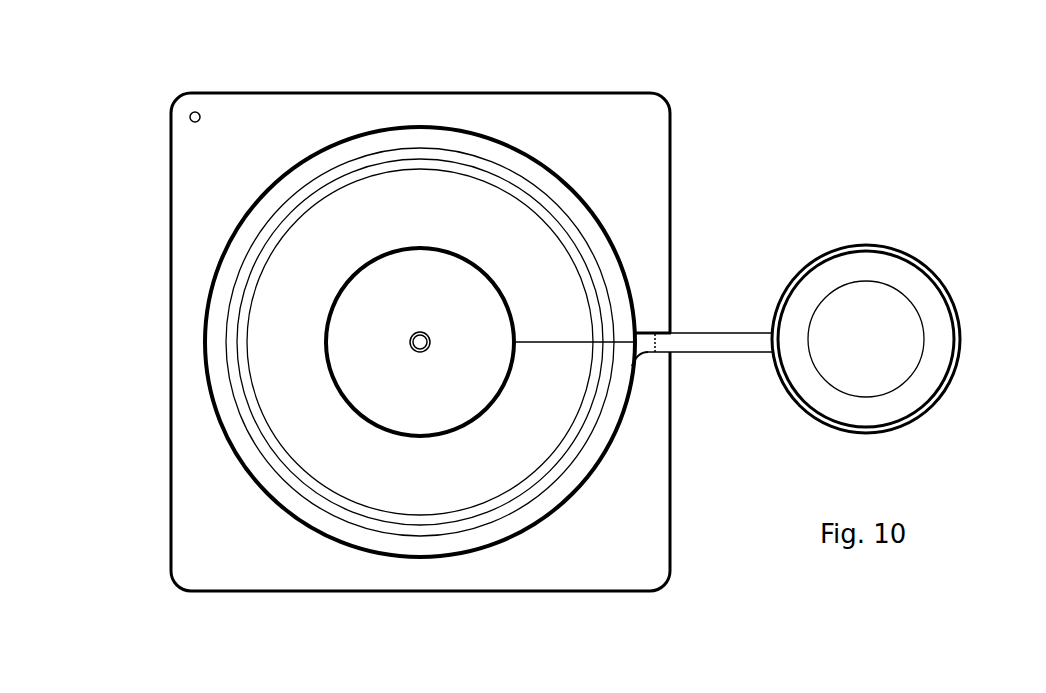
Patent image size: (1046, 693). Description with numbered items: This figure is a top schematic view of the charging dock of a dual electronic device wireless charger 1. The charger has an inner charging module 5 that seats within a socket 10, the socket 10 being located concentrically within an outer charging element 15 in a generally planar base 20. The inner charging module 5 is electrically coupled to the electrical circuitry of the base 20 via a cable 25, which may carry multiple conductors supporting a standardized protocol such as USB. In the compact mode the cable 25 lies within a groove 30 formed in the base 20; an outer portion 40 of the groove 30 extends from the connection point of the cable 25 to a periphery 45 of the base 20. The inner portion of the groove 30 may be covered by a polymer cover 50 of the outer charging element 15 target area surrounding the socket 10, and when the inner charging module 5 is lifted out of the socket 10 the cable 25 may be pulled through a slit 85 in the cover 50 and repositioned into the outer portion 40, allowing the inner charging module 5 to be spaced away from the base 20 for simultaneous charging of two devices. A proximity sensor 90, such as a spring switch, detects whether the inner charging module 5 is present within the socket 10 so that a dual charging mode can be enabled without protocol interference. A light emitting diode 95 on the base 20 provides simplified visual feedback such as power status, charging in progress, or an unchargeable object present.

The dual electronic device wireless charger 1 is at (467, 632).
The inner charging module 5 is at (866, 338).
The socket 10 is at (427, 295).
The outer charging element 15 is at (578, 268).
The base 20 is at (613, 540).
The cable 25 is at (708, 342).
The groove 30 is at (660, 332).
The outer portion of the groove 40 is at (660, 332).
The periphery 45 is at (671, 248).
The polymer cover 50 is at (290, 377).
The slit 85 is at (557, 342).
The proximity sensor 90 is at (408, 339).
The light emitting diode 95 is at (190, 117).